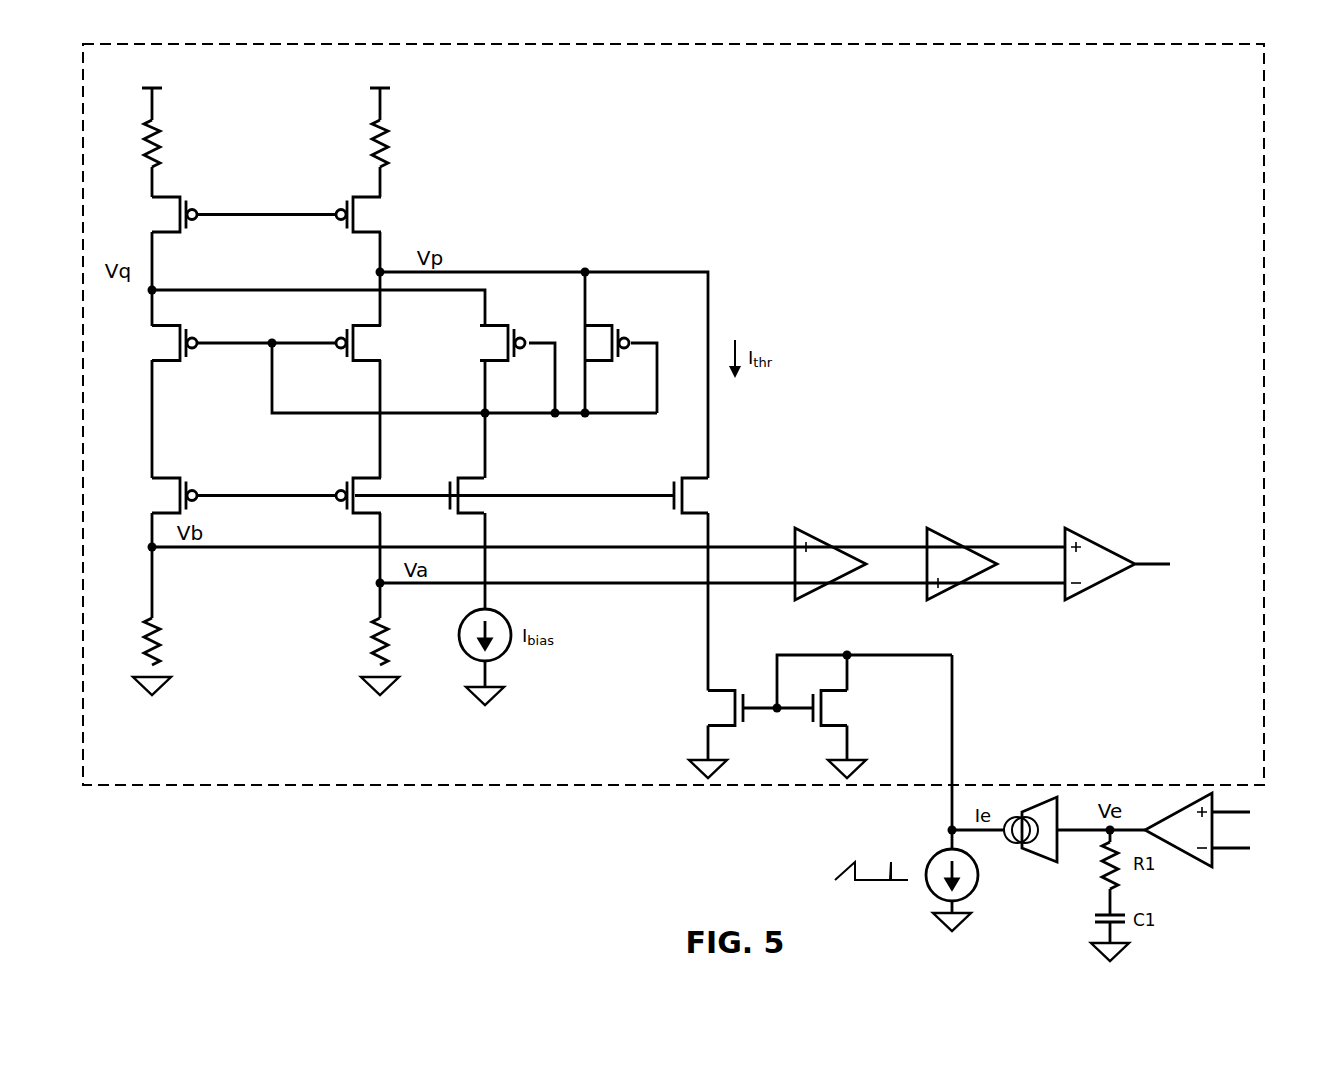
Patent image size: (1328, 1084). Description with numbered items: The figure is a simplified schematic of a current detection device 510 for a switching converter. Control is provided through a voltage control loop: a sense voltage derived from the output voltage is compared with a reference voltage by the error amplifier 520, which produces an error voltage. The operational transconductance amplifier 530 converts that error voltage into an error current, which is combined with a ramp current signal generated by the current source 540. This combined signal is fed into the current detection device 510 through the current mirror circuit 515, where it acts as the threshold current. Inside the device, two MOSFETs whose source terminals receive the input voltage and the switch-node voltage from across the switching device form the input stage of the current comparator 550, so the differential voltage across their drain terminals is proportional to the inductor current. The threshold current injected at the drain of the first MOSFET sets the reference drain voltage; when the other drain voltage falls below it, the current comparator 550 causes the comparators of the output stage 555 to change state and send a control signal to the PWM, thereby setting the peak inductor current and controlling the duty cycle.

The current detection device 510 is at (602, 100).
The current comparator 550 is at (553, 204).
The output stage 555 is at (960, 476).
The current mirror circuit 515 is at (763, 645).
The current source 540 is at (922, 862).
The operational transconductance amplifier (OTA) 530 is at (1050, 870).
The error amplifier 520 is at (1208, 868).